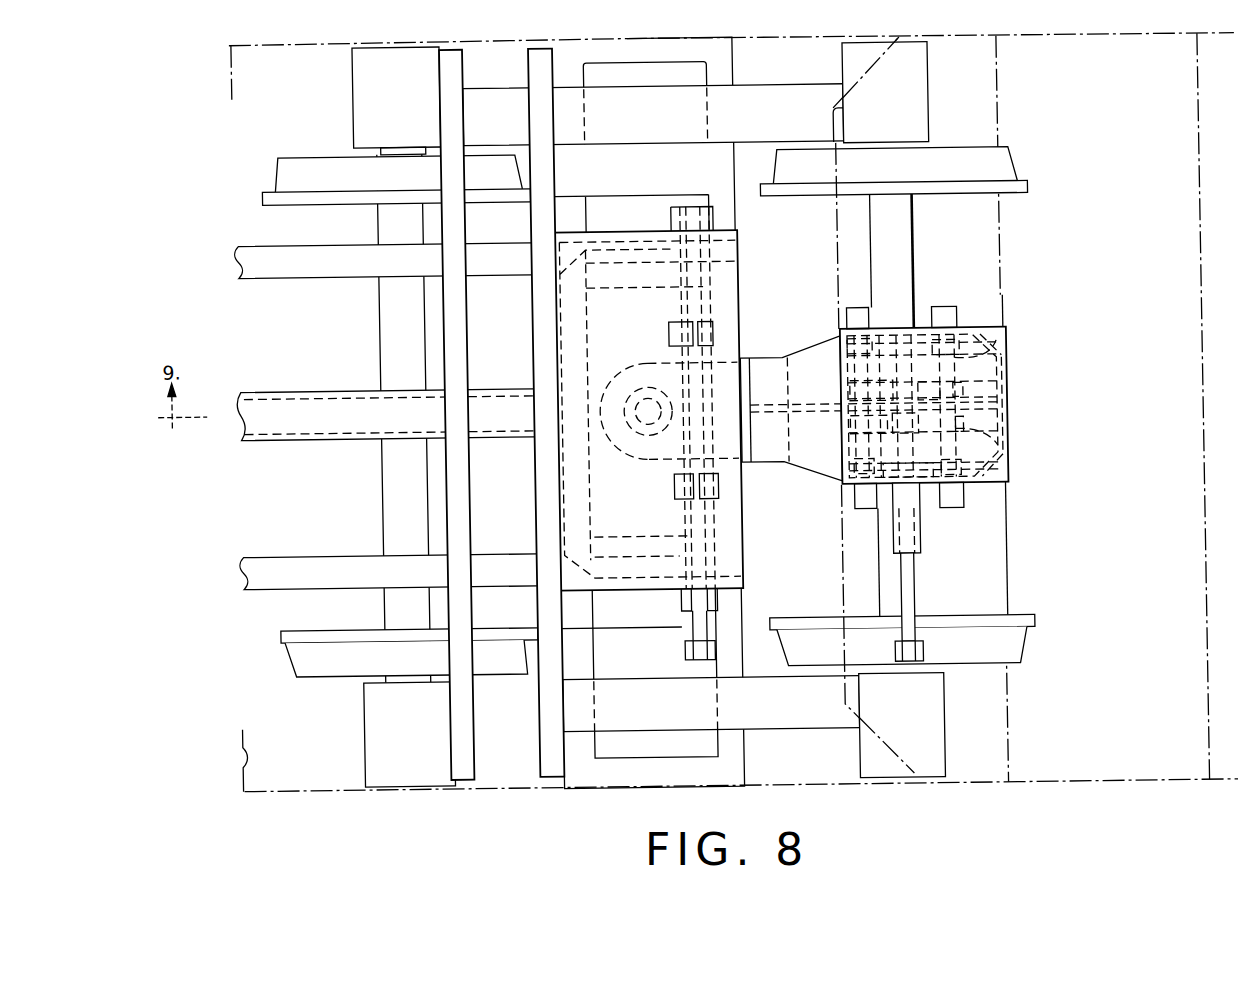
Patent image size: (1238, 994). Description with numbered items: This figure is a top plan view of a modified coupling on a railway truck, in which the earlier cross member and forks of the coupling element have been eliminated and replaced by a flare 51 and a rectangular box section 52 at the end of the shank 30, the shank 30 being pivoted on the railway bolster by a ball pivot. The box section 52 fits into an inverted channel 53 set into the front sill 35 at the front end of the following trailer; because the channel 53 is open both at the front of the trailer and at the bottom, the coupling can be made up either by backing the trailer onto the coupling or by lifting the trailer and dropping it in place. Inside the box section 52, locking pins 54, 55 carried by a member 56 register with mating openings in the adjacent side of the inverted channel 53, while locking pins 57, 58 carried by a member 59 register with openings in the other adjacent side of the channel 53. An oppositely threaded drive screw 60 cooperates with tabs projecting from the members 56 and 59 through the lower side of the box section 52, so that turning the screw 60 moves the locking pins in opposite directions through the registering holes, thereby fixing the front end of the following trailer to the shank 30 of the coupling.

The shank 30 is at (721, 383).
The front sill 35 is at (828, 586).
The flare 51 is at (814, 347).
The rectangular box section 52 is at (972, 340).
The inverted channel 53 is at (846, 493).
The locking pin 54 is at (841, 368).
The locking pin 55 is at (1003, 365).
The member 56 is at (883, 350).
The locking pin 57 is at (841, 450).
The locking pin 58 is at (1001, 441).
The member 59 is at (841, 428).
The oppositely threaded drive screw 60 is at (907, 593).